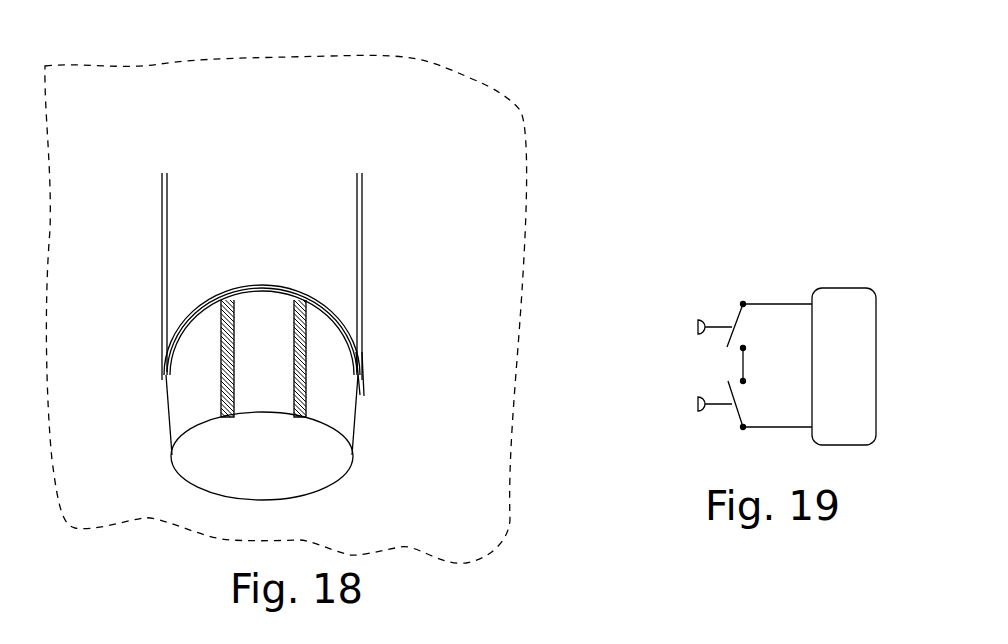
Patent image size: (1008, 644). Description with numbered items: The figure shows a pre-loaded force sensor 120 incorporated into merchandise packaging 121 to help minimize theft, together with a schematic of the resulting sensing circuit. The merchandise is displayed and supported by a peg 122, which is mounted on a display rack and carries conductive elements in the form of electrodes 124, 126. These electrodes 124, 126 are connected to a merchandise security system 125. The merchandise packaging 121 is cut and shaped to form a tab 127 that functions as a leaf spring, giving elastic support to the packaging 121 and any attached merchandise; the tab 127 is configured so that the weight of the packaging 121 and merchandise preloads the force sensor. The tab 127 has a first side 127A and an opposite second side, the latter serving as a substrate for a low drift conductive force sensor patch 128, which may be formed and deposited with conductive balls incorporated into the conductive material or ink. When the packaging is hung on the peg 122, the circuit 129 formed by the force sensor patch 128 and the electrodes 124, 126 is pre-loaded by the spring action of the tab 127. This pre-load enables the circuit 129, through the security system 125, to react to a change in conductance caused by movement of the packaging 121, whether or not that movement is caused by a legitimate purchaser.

In FIG. 18, the pre-loaded force sensor 120 is at (122, 242).
In FIG. 18, the merchandise packaging 121 is at (497, 110).
In FIG. 18, the peg 122 is at (335, 470).
In FIG. 18, the electrode 124 is at (306, 382).
In FIG. 19, the electrode 124 is at (738, 418).
In FIG. 19, the merchandise security system 125 is at (848, 297).
In FIG. 18, the electrode 126 is at (221, 382).
In FIG. 19, the electrode 126 is at (740, 303).
In FIG. 18, the tab 127 is at (343, 215).
In FIG. 18, the first side of tab 127A is at (306, 267).
In FIG. 18, the low drift conductive force sensor patch 128 is at (358, 356).
In FIG. 19, the low drift conductive force sensor patch 128 is at (738, 361).
In FIG. 19, the circuit 129 is at (766, 238).